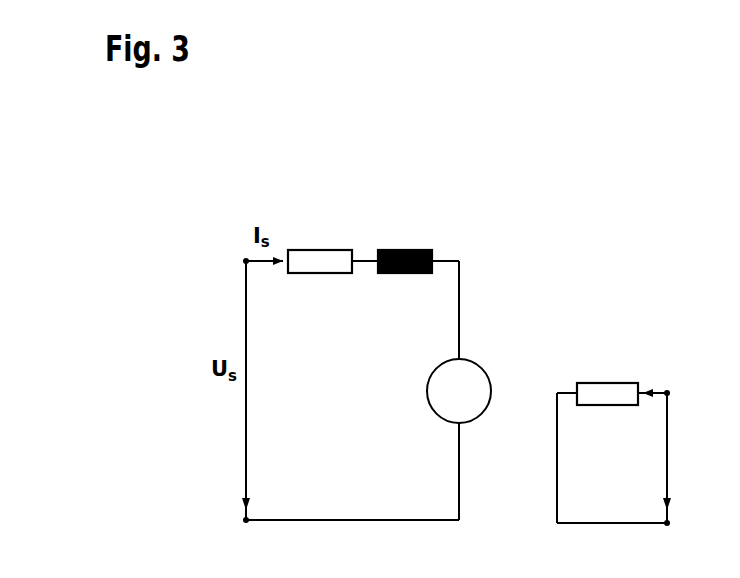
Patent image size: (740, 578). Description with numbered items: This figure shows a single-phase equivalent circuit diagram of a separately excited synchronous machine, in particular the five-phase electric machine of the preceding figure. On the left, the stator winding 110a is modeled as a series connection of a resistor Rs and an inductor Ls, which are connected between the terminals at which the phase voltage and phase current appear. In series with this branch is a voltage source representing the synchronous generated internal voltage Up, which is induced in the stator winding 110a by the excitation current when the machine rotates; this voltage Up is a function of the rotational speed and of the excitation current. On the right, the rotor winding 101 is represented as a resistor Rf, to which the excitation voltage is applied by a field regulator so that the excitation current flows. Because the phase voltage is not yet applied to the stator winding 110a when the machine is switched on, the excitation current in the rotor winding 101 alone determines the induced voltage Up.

The stator winding 110a is at (360, 218).
The rotor winding 101 is at (637, 393).
The resistor Rs is at (320, 248).
The inductor Ls is at (405, 248).
The resistor Rf is at (607, 378).
The synchronous generated internal voltage Up is at (417, 360).